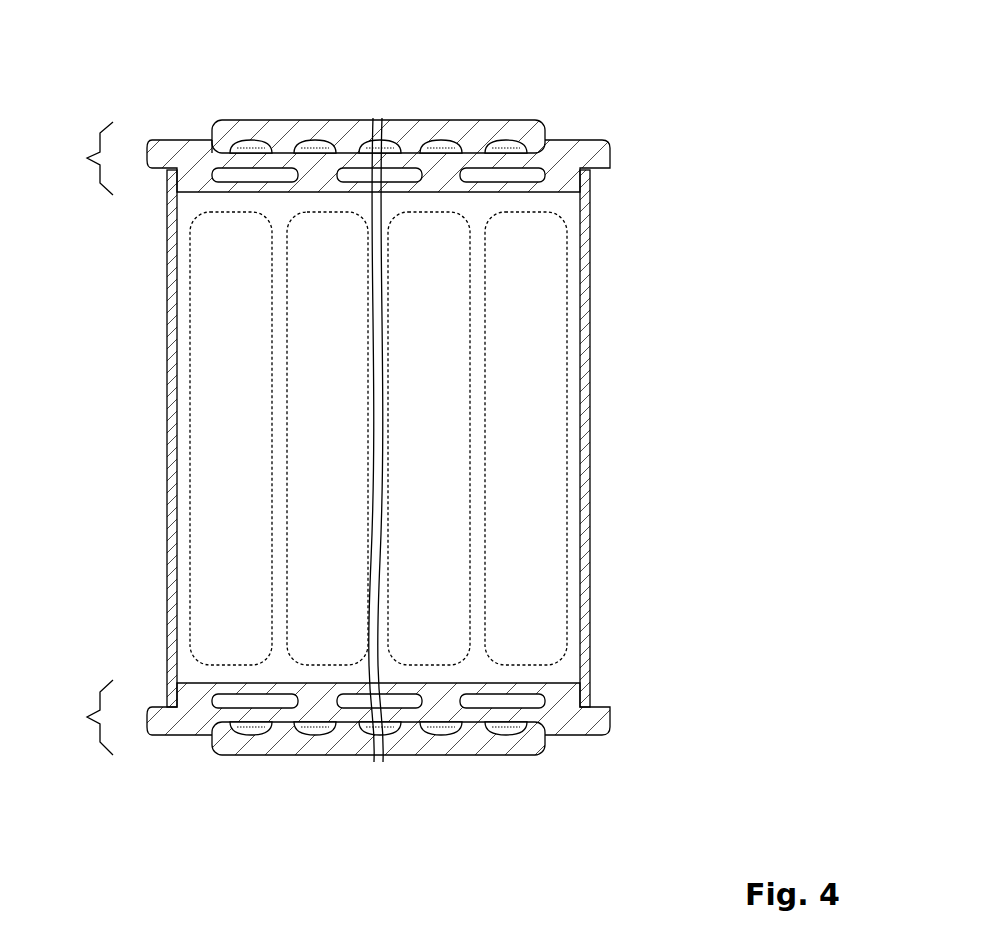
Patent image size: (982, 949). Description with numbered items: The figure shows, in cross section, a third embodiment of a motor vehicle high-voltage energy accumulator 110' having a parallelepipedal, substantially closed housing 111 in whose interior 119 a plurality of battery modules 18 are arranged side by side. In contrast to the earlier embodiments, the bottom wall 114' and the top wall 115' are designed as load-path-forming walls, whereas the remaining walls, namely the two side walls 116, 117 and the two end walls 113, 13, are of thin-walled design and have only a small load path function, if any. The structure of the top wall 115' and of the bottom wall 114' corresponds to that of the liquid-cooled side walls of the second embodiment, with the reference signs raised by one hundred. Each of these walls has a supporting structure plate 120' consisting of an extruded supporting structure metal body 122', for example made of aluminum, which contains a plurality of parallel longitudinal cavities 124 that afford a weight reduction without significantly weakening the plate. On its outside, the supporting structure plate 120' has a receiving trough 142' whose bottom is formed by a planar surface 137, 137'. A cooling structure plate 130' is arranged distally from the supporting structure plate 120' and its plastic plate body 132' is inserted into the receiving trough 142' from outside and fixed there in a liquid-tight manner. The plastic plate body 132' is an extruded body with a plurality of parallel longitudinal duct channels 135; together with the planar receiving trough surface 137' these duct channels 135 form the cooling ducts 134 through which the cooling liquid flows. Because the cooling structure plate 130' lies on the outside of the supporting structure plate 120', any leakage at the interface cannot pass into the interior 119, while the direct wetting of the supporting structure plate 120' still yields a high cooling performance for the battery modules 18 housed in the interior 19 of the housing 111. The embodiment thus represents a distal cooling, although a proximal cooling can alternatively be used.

The motor vehicle high-voltage energy accumulator 110' is at (634, 75).
The housing 111 is at (735, 630).
The front end wall 113 is at (572, 527).
The bottom wall 114' is at (77, 717).
The top wall 115' is at (77, 158).
The top wall 116 is at (595, 312).
The bottom wall 117 is at (160, 325).
The battery module 18 is at (192, 567).
The interior 19 is at (560, 667).
The interior 119 is at (550, 427).
The supporting structure plate 120' is at (435, 435).
The supporting structure metal body 122' is at (154, 109).
The cavity 124 is at (252, 140).
The cooling structure plate 130' is at (445, 436).
The plastic plate body 132' is at (505, 90).
The cooling duct 134 is at (317, 141).
The duct channel 135 is at (505, 155).
The planar vertical surface 137 is at (561, 102).
The receiving trough surface 137' is at (378, 365).
The receiving trough 142' is at (207, 103).
The front end wall 13 is at (405, 755).